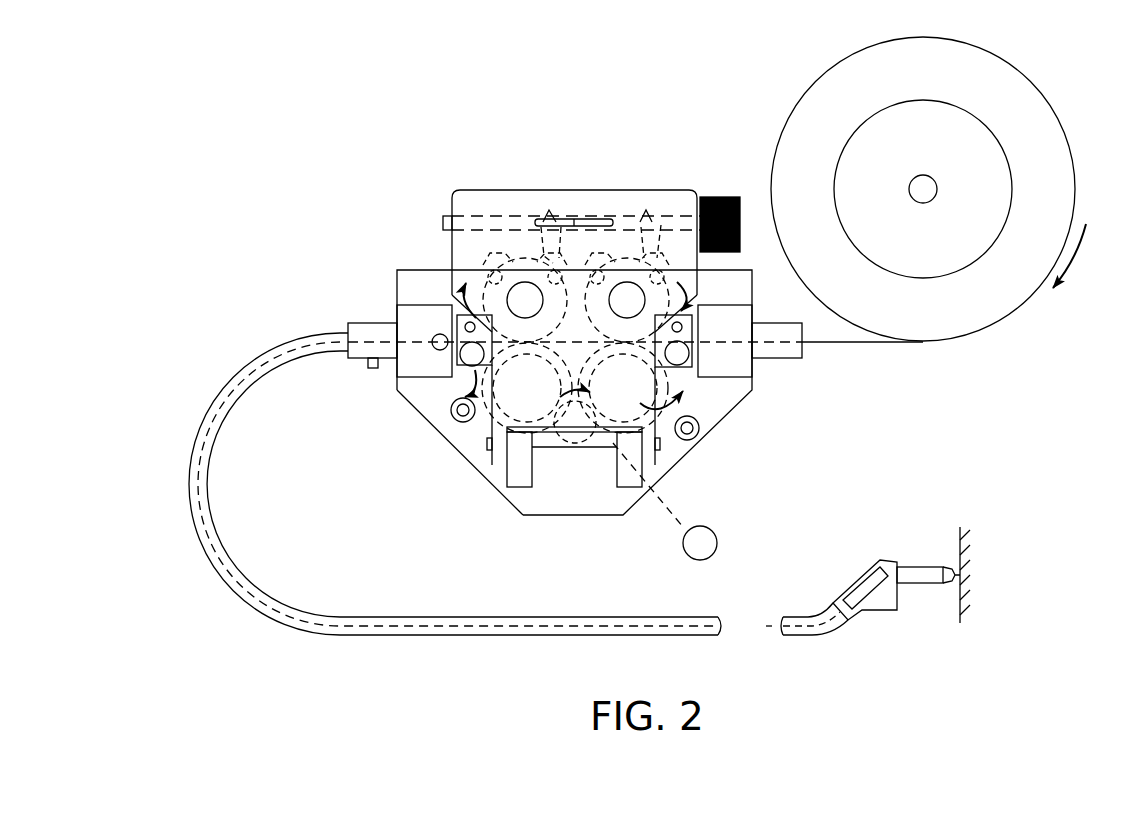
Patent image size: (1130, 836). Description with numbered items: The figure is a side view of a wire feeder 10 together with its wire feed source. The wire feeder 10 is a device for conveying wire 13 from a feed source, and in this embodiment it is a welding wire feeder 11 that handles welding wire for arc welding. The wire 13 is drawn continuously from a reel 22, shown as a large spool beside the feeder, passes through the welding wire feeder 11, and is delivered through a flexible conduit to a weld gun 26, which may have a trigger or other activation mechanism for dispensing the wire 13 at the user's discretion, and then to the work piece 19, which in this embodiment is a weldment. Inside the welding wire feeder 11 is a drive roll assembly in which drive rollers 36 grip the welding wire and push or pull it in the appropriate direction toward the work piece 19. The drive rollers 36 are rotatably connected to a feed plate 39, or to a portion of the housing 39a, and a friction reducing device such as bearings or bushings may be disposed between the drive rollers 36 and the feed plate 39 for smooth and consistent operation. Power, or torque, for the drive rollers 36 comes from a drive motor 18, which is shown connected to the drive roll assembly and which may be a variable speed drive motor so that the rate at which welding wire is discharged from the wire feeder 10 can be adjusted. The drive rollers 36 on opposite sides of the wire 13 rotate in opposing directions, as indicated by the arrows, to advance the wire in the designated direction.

The wire feeder 10 is at (388, 153).
The welding wire feeder 11 is at (422, 135).
The wire 13 is at (808, 346).
The drive motor 18 is at (720, 543).
The work piece 19 is at (978, 553).
The reel 22 is at (1040, 118).
The weld gun 26 is at (858, 612).
The drive rollers 36 is at (492, 308).
The feed plate 39 is at (410, 398).
The housing 39a is at (418, 433).